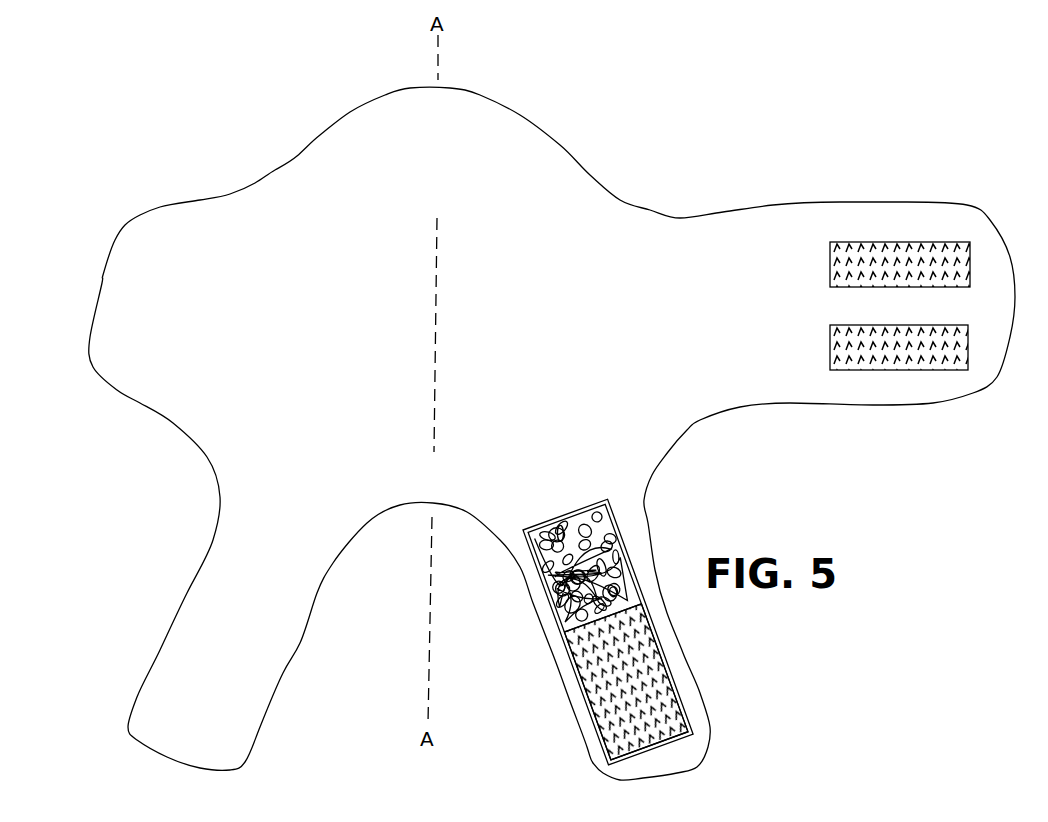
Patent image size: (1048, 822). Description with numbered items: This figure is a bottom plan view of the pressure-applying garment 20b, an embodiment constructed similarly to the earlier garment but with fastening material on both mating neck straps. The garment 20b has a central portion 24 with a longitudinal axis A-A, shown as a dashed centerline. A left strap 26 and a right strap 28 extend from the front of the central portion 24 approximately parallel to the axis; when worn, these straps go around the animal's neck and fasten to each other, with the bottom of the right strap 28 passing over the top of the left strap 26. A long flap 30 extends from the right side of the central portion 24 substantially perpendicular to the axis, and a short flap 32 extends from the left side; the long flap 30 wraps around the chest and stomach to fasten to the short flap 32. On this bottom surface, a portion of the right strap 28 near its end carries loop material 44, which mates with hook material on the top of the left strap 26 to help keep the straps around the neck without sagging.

The pressure-applying garment 20b is at (181, 151).
The central portion 24 is at (312, 170).
The left strap 26 is at (140, 705).
The right strap 28 is at (700, 747).
The long flap 30 is at (922, 218).
The short flap 32 is at (112, 288).
The loop material 44 is at (620, 547).